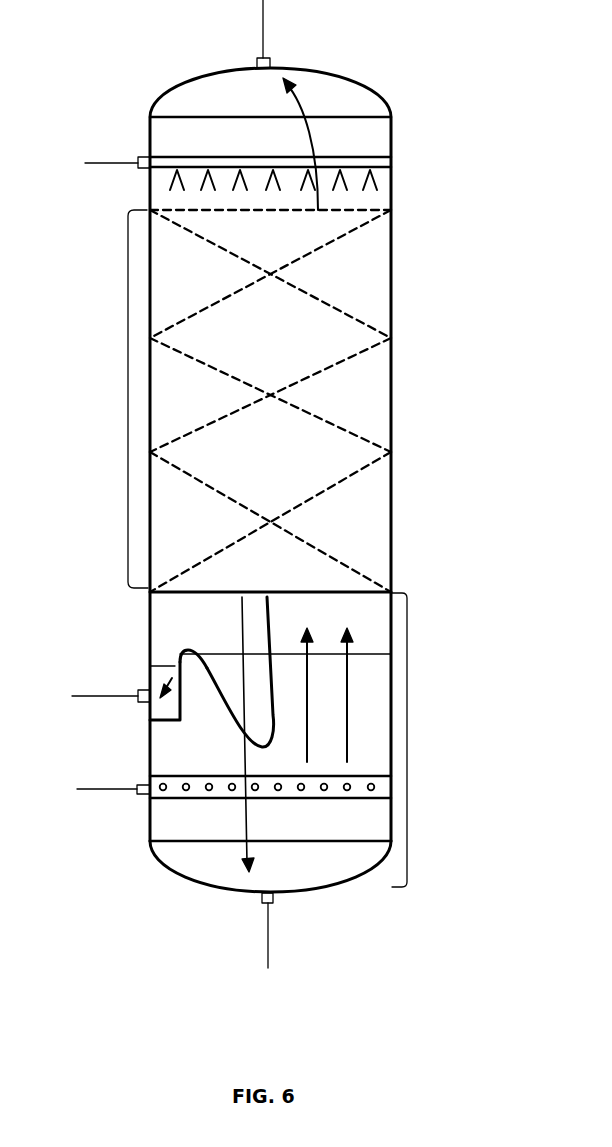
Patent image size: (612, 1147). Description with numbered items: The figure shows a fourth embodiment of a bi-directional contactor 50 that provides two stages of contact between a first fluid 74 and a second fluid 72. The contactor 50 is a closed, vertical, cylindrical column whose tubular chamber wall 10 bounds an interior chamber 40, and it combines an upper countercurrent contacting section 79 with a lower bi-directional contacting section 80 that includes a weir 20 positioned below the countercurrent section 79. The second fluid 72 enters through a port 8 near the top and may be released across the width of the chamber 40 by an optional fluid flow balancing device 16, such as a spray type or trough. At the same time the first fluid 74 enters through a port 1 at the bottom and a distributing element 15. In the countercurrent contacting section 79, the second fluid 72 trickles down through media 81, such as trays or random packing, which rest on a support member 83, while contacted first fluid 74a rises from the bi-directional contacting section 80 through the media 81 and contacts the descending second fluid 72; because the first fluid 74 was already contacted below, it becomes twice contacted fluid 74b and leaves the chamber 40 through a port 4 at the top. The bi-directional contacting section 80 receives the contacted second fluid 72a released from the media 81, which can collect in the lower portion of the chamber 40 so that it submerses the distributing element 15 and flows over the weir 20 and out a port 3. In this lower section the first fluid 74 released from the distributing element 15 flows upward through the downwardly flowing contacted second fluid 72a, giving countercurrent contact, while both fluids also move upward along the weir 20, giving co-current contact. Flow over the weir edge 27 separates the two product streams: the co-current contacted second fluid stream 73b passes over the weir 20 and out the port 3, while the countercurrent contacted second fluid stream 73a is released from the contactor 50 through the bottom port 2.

The first fluid inlet port 1 is at (138, 785).
The second fluid effluent port 2 is at (275, 902).
The second fluid effluent port 3 is at (138, 690).
The first fluid effluent port 4 is at (257, 60).
The second fluid inlet port 8 is at (140, 158).
The chamber wall 10 is at (167, 92).
The distributing element 15 is at (173, 790).
The fluid flow balancing device 16 is at (393, 163).
The weir 20 is at (150, 722).
The weir edge 27 is at (183, 657).
The chamber 40 is at (163, 197).
The bi-directional contactor 50 is at (326, 464).
The second fluid 72 is at (378, 183).
The contacted second fluid 72a is at (268, 630).
The countercurrent contacted second fluid stream 73a is at (245, 818).
The co-current contacted second fluid stream 73b is at (170, 682).
The first fluid 74 is at (347, 725).
The contacted first fluid 74a is at (345, 632).
The twice contacted first fluid 74b is at (298, 107).
The countercurrent contacting section 79 is at (128, 398).
The bi-directional contacting section 80 is at (407, 743).
The media 81 is at (363, 397).
The support member 83 is at (168, 593).